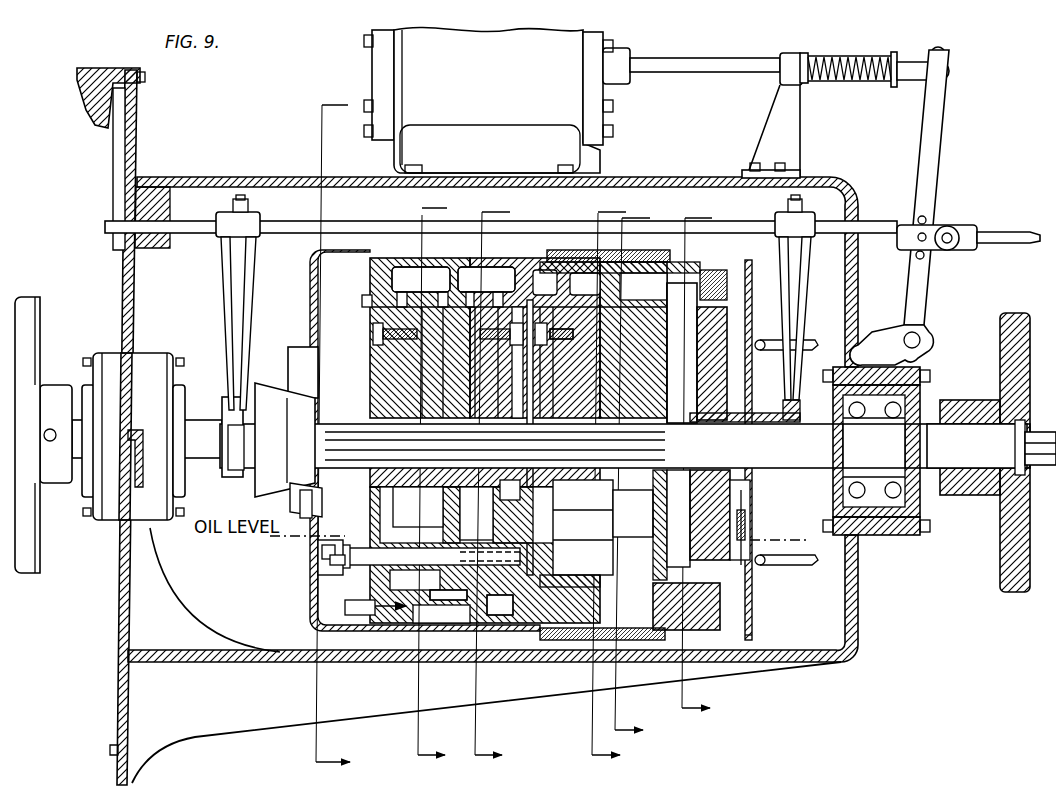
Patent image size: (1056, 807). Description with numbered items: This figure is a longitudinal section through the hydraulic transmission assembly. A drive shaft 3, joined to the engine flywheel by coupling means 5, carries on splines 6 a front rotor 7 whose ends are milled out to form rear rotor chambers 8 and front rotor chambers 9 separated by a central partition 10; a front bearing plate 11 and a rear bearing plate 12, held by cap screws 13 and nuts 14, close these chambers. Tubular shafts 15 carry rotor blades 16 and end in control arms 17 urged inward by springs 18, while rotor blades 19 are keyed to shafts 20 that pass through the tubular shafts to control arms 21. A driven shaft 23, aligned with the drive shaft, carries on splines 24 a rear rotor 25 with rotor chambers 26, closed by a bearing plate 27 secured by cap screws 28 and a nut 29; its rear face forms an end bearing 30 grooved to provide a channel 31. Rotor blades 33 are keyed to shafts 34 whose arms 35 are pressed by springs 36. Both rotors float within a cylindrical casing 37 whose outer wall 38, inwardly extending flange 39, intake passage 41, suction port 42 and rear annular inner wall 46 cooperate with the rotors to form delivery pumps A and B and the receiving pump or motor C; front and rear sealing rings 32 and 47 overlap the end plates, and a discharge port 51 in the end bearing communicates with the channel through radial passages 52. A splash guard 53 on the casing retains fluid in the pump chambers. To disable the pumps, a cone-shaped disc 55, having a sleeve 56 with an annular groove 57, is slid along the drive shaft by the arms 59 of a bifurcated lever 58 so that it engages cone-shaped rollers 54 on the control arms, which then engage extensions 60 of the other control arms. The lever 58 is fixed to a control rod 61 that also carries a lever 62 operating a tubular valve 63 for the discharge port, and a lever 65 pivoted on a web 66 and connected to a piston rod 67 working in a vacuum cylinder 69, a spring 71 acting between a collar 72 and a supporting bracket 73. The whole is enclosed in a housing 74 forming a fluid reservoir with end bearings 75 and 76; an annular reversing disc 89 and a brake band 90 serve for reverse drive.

The shaft 3 is at (74, 409).
The coupling means 5 is at (35, 297).
The splines 6 is at (366, 431).
The rotor 7 is at (395, 371).
The rotor chambers 8 is at (476, 513).
The rotor chambers 9 is at (418, 507).
The central partition 10 is at (450, 510).
The front bearing plate 11 is at (372, 352).
The rear bearing plate 12 is at (493, 266).
The cap screws 13 is at (372, 331).
The nuts 14 is at (510, 488).
The tubular shafts 15 is at (427, 486).
The rotor blades 16 is at (447, 630).
The control arm 17 is at (283, 594).
The spring 18 is at (698, 463).
The rotor blade 19 is at (497, 605).
The shaft 20 is at (316, 564).
The control arm 21 is at (318, 546).
The driven shaft 23 is at (551, 444).
The splines 24 is at (667, 437).
The rotor 25 is at (682, 353).
The rotor chambers 26 is at (666, 550).
The bearing plate 27 is at (534, 266).
The cap screws 28 is at (566, 326).
The nut 29 is at (583, 527).
The end bearing 30 is at (717, 314).
The channel 31 is at (681, 353).
The front sealing ring 32 is at (363, 297).
The rotor blade 33 is at (573, 526).
The shaft 34 is at (571, 553).
The arm 35 is at (752, 574).
The spring 36 is at (746, 528).
The cylindrical casing 37 is at (525, 632).
The outer wall 38 is at (407, 632).
The flange 39 is at (525, 588).
The intake passage 41 is at (460, 634).
The suction port 42 is at (360, 606).
The annular inner wall 46 is at (557, 262).
The rear sealing ring 47 is at (752, 610).
The discharge port 51 is at (770, 492).
The passages 52 is at (698, 518).
The splash guard 53 is at (312, 290).
The cone-shaped roller 54 is at (300, 503).
The cone-shaped disc 55 is at (285, 440).
The sleeve 56 is at (237, 472).
The annular groove 57 is at (237, 472).
The bifurcated lever 58 is at (232, 344).
The arms 59 is at (228, 414).
The extensions 60 is at (338, 495).
The rod 61 is at (304, 224).
The lever 62 is at (800, 310).
The tubular valve 63 is at (767, 413).
The lever 65 is at (932, 182).
The web 66 is at (892, 345).
The piston rod 67 is at (700, 62).
The cylinder 69 is at (497, 100).
The spring 71 is at (866, 42).
The collar 72 is at (895, 58).
The supporting bracket 73 is at (772, 115).
The housing 74 is at (853, 617).
The end bearing 75 is at (133, 436).
The end bearing 76 is at (850, 587).
The reversing disc 89 is at (752, 634).
The brake band 90 is at (580, 642).
The delivery pump A is at (405, 280).
The delivery pump B is at (493, 265).
The receiving pump or motor C is at (623, 560).